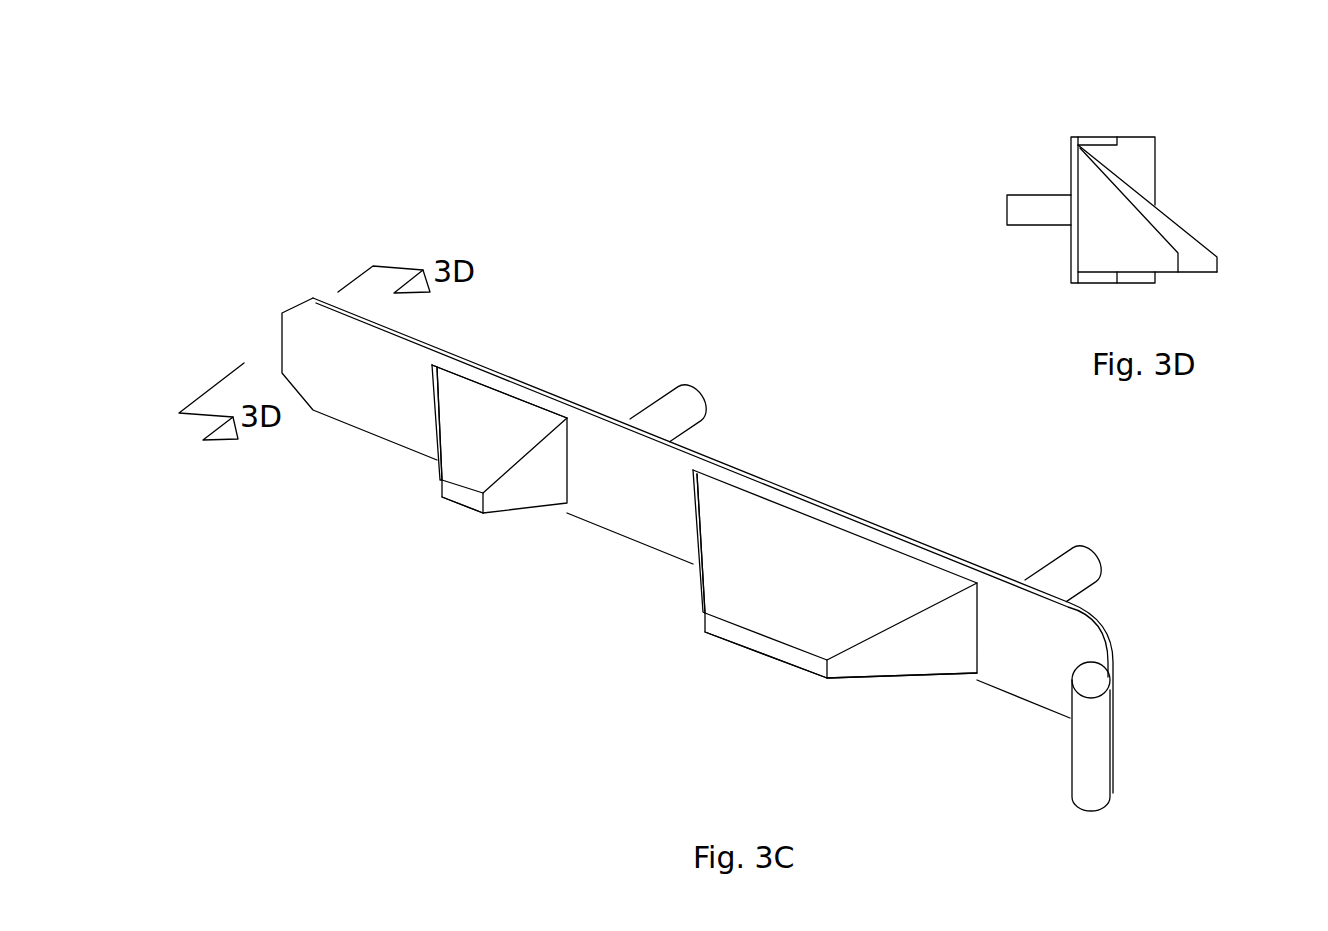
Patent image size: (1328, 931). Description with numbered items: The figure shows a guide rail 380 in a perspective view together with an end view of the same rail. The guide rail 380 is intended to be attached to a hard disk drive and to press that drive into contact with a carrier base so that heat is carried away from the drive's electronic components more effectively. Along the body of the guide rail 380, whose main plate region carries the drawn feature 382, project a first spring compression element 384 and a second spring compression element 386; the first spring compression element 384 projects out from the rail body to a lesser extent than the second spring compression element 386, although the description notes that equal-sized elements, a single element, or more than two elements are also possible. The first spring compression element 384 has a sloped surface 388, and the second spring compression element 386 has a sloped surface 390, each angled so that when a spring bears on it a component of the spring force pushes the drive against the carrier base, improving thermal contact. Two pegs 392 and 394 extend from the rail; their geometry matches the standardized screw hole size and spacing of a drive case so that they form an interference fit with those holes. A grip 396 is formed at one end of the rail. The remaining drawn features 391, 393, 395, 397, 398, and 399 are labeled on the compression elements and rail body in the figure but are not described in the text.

In FIG. 3C, the guide rail 380 is at (623, 302).
In FIG. 3D, the guide rail 380 is at (1173, 102).
In FIG. 3C, the mounting plate 382 is at (380, 388).
In FIG. 3D, the mounting plate 382 is at (1075, 255).
In FIG. 3C, the first spring compression element 384 is at (430, 587).
In FIG. 3D, the first spring compression element 384 is at (1133, 283).
In FIG. 3C, the second spring compression element 386 is at (733, 722).
In FIG. 3D, the second spring compression element 386 is at (1205, 278).
In FIG. 3C, the surface 388 is at (463, 460).
In FIG. 3C, the surface 390 is at (732, 568).
In FIG. 3C, the bottom edge of second bracket 391 is at (887, 668).
In FIG. 3C, the peg 392 is at (683, 392).
In FIG. 3D, the peg 392 is at (1037, 193).
In FIG. 3C, the front wall of first bracket 393 is at (528, 498).
In FIG. 3C, the peg 394 is at (1080, 552).
In FIG. 3C, the side wall of second bracket 395 is at (693, 573).
In FIG. 3D, the side wall of second bracket 395 is at (1197, 240).
In FIG. 3C, the grip 396 is at (1060, 748).
In FIG. 3D, the grip 396 is at (1150, 163).
In FIG. 3C, the bottom wall of second bracket 397 is at (723, 632).
In FIG. 3C, the side wall of first bracket 398 is at (437, 463).
In FIG. 3D, the side wall of first bracket 398 is at (1147, 233).
In FIG. 3C, the bottom wall of first bracket 399 is at (460, 498).